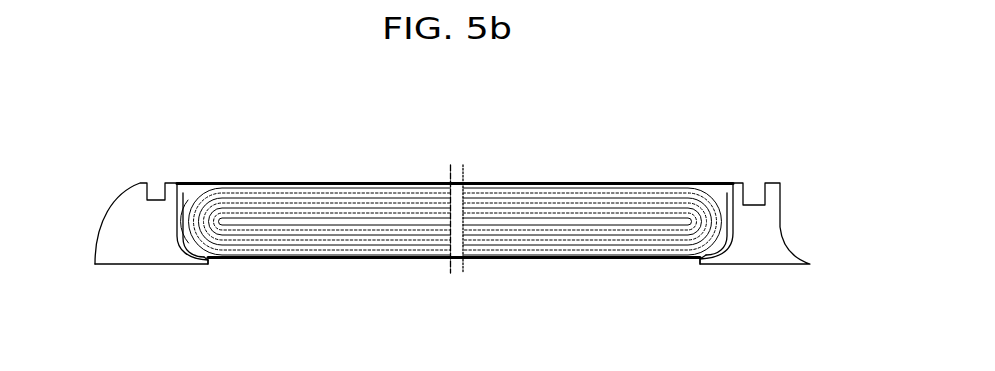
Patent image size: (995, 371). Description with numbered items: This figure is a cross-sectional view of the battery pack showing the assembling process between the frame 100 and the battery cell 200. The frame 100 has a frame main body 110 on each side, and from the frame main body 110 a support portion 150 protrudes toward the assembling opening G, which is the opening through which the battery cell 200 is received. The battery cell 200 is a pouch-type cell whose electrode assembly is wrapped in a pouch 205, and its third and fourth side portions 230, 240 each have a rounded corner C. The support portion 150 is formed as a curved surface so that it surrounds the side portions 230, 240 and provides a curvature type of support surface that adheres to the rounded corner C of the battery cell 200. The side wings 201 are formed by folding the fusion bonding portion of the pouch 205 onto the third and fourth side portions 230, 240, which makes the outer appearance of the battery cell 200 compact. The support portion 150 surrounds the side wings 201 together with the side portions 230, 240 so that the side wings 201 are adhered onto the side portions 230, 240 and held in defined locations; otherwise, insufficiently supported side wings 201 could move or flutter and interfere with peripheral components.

The frame 100 is at (442, 219).
The frame main body 110 is at (113, 243).
The third side portion 230 is at (177, 217).
The fourth side portion 240 is at (733, 218).
The battery cell 200 is at (507, 178).
The pouch 205 is at (578, 182).
The side wing 201 is at (183, 247).
The support portion 150 is at (207, 265).
The rounded corner C is at (193, 253).
The assembling opening G is at (480, 272).